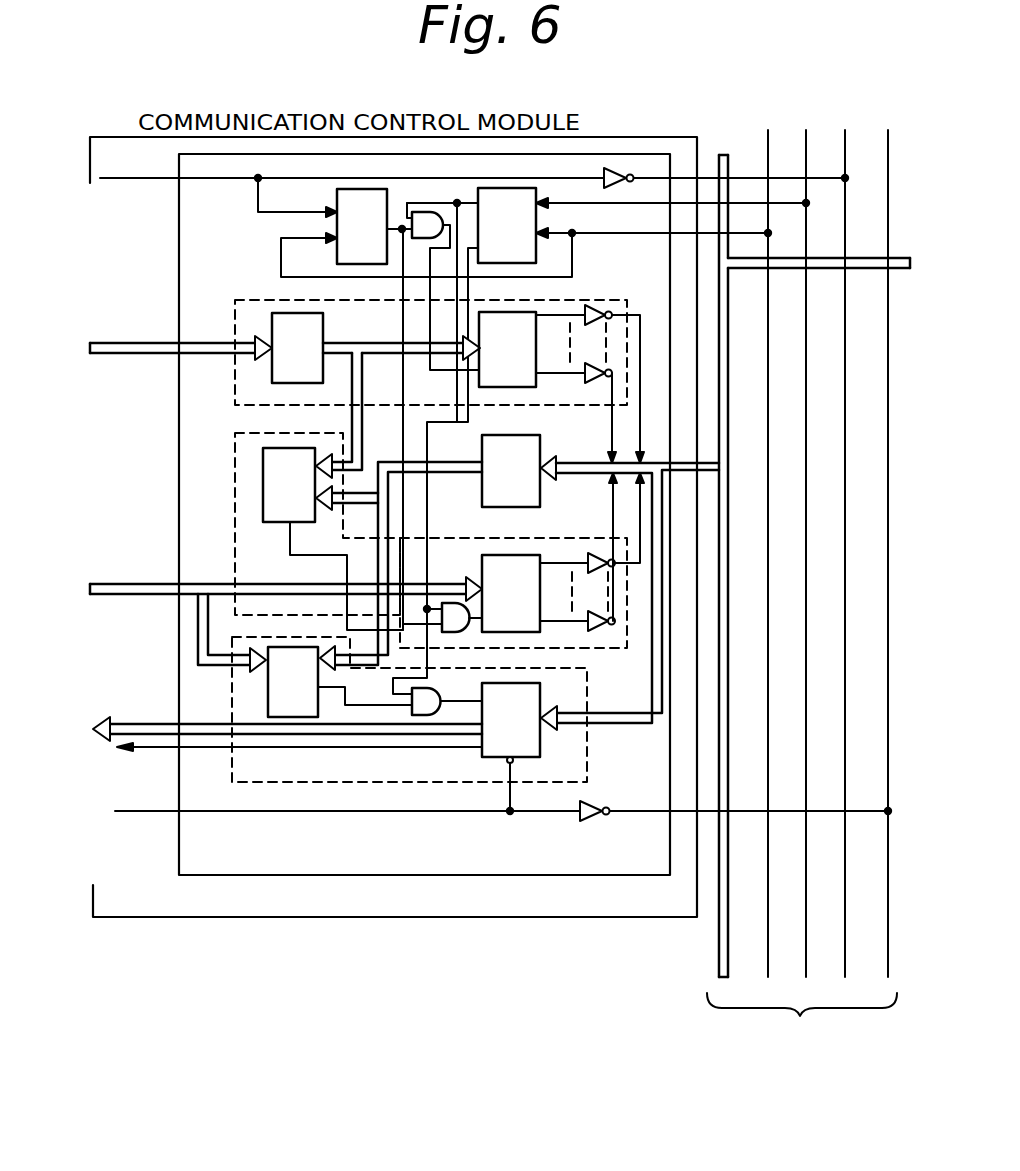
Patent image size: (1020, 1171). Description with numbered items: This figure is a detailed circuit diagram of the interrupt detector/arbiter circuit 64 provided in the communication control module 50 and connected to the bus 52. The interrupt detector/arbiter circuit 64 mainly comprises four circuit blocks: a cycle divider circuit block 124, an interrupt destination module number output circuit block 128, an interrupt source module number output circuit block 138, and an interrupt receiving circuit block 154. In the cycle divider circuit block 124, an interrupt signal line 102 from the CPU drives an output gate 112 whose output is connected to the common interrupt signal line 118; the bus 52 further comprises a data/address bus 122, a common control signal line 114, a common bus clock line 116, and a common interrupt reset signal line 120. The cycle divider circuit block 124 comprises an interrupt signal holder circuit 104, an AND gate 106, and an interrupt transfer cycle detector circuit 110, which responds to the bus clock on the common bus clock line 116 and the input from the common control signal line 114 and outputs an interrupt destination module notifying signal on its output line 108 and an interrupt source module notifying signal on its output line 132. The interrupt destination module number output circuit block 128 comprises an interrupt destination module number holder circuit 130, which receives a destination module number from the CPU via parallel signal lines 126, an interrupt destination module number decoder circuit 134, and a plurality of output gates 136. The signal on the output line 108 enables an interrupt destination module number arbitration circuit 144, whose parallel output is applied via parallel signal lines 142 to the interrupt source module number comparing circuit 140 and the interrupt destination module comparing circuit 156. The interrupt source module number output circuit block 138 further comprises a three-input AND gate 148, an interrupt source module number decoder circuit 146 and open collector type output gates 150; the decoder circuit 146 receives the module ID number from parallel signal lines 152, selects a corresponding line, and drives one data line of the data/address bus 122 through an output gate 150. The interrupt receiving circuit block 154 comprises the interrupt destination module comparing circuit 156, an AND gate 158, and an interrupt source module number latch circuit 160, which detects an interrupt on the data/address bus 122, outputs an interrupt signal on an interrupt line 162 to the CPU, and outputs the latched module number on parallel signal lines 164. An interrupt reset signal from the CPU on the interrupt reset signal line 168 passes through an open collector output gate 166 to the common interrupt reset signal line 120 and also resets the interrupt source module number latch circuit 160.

The communication control module 50 is at (357, 917).
The interrupt detector/arbiter circuit 64 is at (247, 875).
The bus 52 is at (858, 1030).
The interrupt signal line 102 is at (148, 178).
The interrupt signal holder circuit 104 is at (337, 227).
The AND gate 106 is at (425, 212).
The output line 108 is at (407, 203).
The interrupt transfer cycle detector circuit 110 is at (498, 196).
The output gate 112 is at (623, 186).
The common control signal line 114 is at (768, 130).
The common bus clock line 116 is at (806, 130).
The common interrupt signal line 118 is at (845, 130).
The common interrupt reset signal line 120 is at (888, 130).
The data/address bus 122 is at (897, 256).
The cycle divider circuit block 124 is at (281, 257).
The parallel signal lines 126 is at (147, 343).
The interrupt destination module number output circuit block 128 is at (237, 395).
The interrupt destination module number holder circuit 130 is at (275, 330).
The output line 132 is at (428, 418).
The interrupt destination module number decoder circuit 134 is at (530, 387).
The output gates 136 is at (598, 305).
The interrupt source module number output circuit block 138 is at (235, 453).
The interrupt source module number comparing circuit 140 is at (267, 497).
The parallel signal lines 142 is at (393, 462).
The interrupt destination module number arbitration circuit 144 is at (530, 507).
The interrupt source module number decoder circuit 146 is at (490, 556).
The AND gate 148 is at (455, 634).
The open collector type output gates 150 is at (608, 638).
The parallel signal lines 152 is at (143, 584).
The interrupt receiving circuit block 154 is at (232, 680).
The interrupt destination module comparing circuit 156 is at (273, 703).
The AND gate 158 is at (424, 716).
The interrupt source module number latch circuit 160 is at (540, 742).
The interrupt line 162 is at (208, 748).
The parallel signal lines 164 is at (158, 735).
The output gate 166 is at (595, 821).
The interrupt reset signal line 168 is at (148, 813).